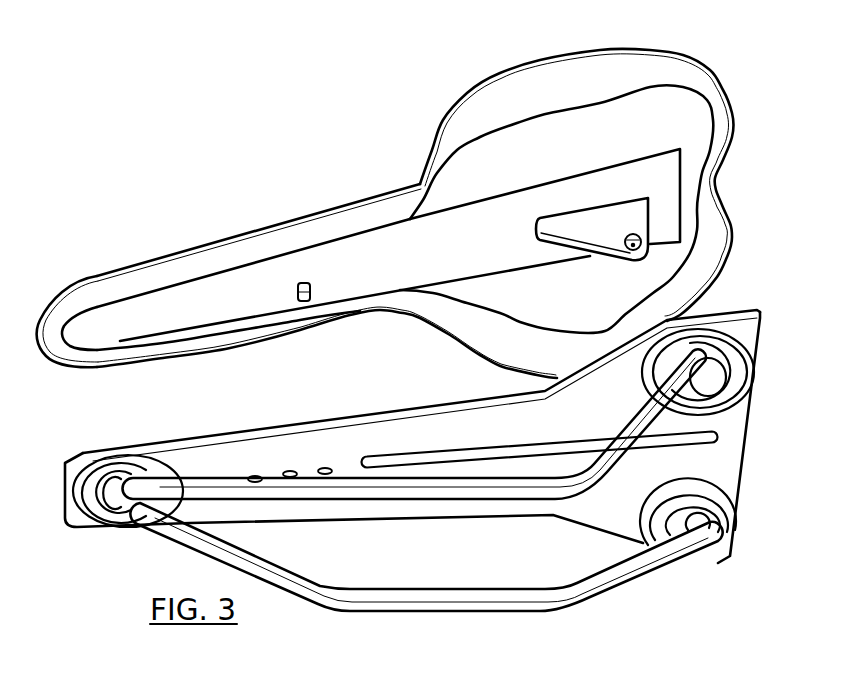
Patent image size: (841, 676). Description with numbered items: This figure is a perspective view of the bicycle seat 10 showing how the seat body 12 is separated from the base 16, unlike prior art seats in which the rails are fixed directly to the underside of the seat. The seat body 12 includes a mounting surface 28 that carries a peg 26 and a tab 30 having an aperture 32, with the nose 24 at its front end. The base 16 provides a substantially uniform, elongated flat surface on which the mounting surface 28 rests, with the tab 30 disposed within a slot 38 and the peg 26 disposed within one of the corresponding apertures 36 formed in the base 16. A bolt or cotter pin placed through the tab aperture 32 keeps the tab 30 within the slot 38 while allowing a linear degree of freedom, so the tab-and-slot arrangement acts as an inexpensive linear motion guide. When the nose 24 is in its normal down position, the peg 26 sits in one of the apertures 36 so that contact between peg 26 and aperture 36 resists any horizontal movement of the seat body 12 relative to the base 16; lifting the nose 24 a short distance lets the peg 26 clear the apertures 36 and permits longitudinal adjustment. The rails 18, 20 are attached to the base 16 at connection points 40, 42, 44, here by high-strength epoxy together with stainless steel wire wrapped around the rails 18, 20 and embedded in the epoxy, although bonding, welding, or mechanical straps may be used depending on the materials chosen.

The seat assembly 10 is at (326, 178).
The seat body 12 is at (571, 76).
The base 16 is at (746, 443).
The rail 18 is at (445, 487).
The rail 20 is at (495, 600).
The nose 24 is at (60, 307).
The peg 26 is at (297, 294).
The mounting surface 28 is at (128, 325).
The tab 30 is at (592, 221).
The aperture 32 is at (637, 236).
The apertures 36 is at (289, 470).
The slot 38 is at (399, 452).
The connection point 40 is at (117, 500).
The connection point 42 is at (710, 530).
The connection point 44 is at (712, 330).